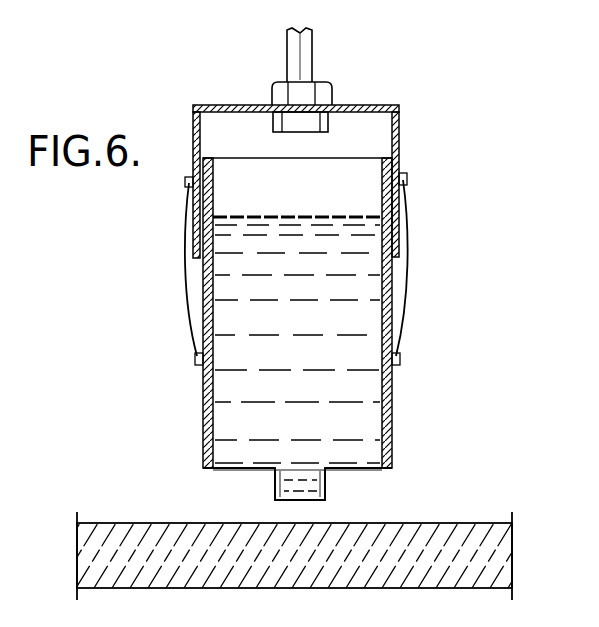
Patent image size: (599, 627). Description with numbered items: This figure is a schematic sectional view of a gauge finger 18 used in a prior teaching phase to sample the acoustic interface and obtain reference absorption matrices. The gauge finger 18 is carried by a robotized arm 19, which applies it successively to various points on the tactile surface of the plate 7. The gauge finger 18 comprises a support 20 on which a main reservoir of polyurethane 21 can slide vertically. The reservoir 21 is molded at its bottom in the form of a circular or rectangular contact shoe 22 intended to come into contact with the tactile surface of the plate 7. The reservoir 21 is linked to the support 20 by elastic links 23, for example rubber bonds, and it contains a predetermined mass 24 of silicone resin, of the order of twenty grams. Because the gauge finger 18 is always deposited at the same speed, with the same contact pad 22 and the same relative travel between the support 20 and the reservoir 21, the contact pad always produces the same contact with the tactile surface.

The gauge finger 18 is at (384, 91).
The robotized arm 19 is at (299, 50).
The support 20 is at (400, 125).
The main reservoir of polyurethane 21 is at (392, 403).
The contact shoe 22 is at (318, 489).
The elastic links 23 is at (187, 303).
The predetermined mass of silicone resin 24 is at (247, 409).
The plate 7 is at (485, 547).